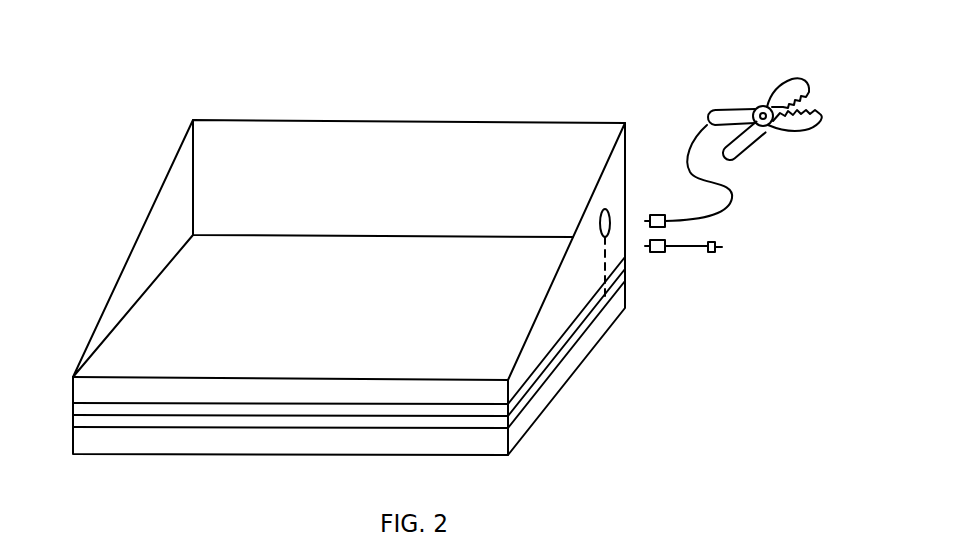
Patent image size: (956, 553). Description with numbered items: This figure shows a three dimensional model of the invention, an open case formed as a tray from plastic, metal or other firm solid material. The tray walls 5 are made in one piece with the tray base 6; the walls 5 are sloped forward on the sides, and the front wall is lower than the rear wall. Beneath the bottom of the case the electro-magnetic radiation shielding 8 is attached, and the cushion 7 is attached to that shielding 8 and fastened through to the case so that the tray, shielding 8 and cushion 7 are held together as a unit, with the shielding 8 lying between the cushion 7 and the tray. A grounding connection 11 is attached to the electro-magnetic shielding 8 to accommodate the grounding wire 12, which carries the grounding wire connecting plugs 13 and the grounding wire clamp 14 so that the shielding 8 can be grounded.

The tray walls 5 is at (349, 287).
The tray base 6 is at (290, 339).
The cushion 7 is at (567, 380).
The electro-magnetic radiation shielding 8 is at (527, 400).
The grounding connection 11 is at (605, 209).
The grounding wire 12 is at (688, 246).
The grounding wire connecting plugs 13 is at (708, 250).
The grounding wire clamps 14 is at (795, 80).